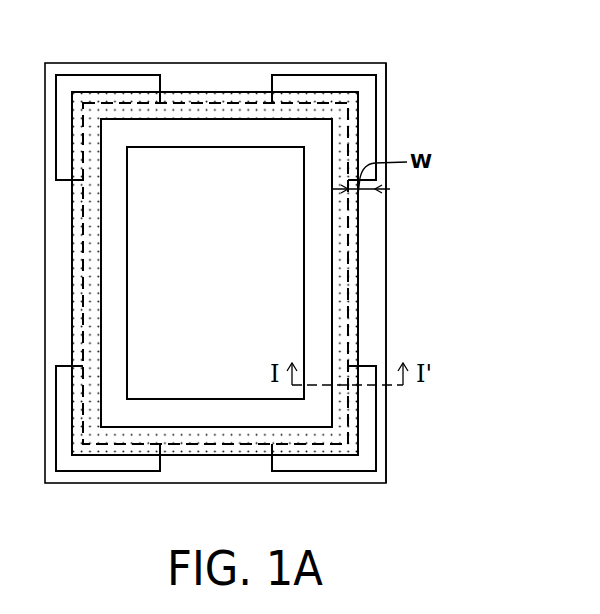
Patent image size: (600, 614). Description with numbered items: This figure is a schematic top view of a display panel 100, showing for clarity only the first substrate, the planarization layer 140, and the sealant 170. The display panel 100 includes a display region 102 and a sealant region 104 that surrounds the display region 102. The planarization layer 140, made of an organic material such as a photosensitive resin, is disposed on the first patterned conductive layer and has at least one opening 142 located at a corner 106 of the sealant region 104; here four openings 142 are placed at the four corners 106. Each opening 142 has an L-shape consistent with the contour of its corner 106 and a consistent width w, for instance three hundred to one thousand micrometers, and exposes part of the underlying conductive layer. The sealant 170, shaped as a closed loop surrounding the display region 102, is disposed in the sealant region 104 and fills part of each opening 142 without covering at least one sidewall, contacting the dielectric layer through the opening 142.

The display panel 100 is at (471, 506).
The display region 102 is at (203, 147).
The sealant region 104 is at (259, 82).
The corner of the sealant region 106 is at (358, 88).
The planarization layer 140 is at (375, 212).
The opening 142 is at (375, 132).
The sealant 170 is at (343, 248).